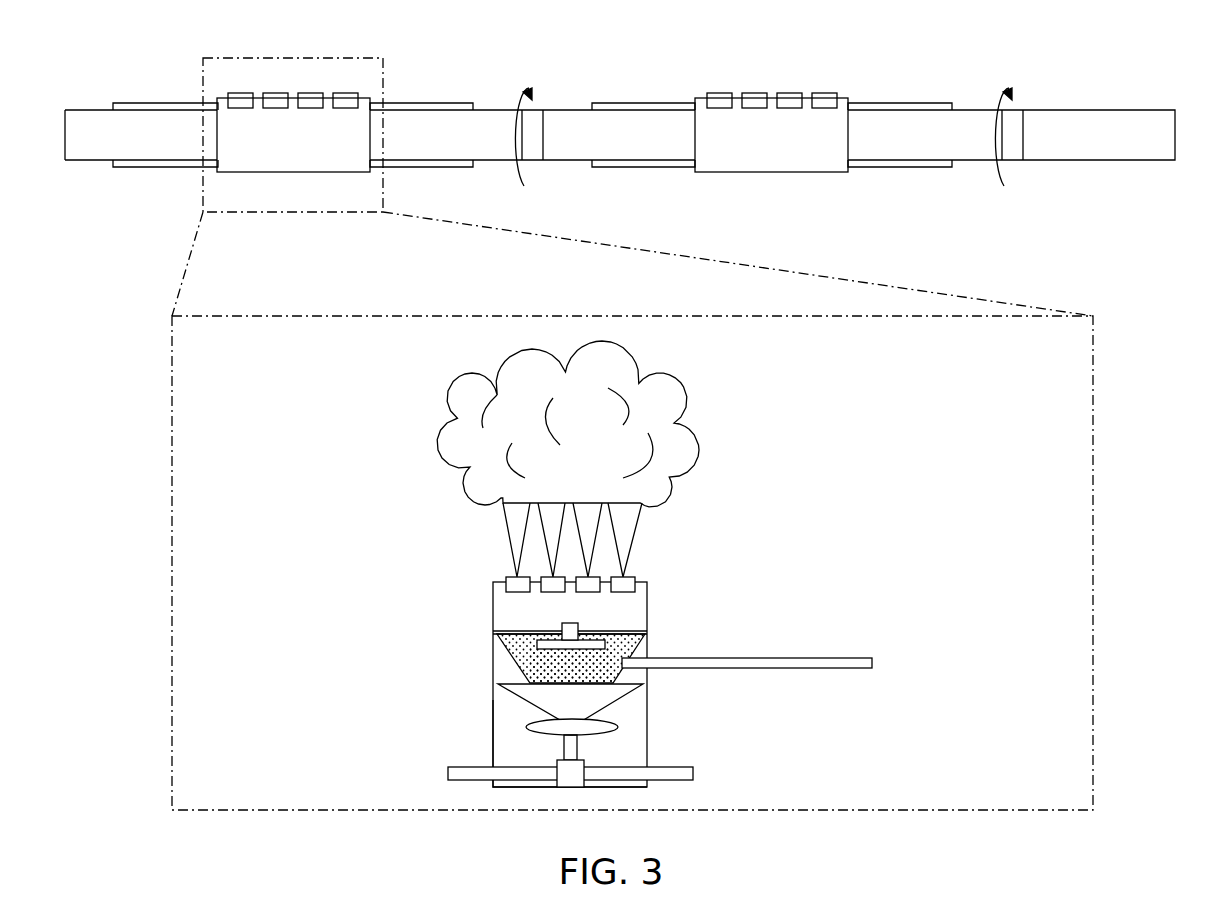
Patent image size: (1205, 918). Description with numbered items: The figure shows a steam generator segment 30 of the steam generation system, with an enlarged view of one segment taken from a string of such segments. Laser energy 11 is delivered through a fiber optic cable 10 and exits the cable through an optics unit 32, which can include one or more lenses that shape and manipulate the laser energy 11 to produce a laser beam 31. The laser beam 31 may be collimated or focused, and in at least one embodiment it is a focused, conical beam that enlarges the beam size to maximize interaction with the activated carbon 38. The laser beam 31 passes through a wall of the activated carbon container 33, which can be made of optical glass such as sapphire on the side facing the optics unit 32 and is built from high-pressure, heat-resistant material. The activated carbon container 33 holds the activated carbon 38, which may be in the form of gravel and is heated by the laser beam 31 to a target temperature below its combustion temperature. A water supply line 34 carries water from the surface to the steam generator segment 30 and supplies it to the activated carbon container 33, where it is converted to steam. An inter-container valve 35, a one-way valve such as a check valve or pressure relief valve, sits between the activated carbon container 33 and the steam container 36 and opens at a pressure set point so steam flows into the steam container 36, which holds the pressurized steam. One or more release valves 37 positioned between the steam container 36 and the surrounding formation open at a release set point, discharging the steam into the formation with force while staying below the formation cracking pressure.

The steam generator segment 30 is at (189, 78).
The fiber optic cable 10 is at (493, 743).
The laser energy 11 is at (672, 767).
The laser beam 31 is at (530, 682).
The optics unit 32 is at (525, 723).
The activated carbon container 33 is at (505, 643).
The water supply line 34 is at (857, 658).
The inter-container valve 35 is at (607, 640).
The steam container 36 is at (500, 605).
The release valves 37 is at (632, 575).
The activated carbon 38 is at (617, 673).